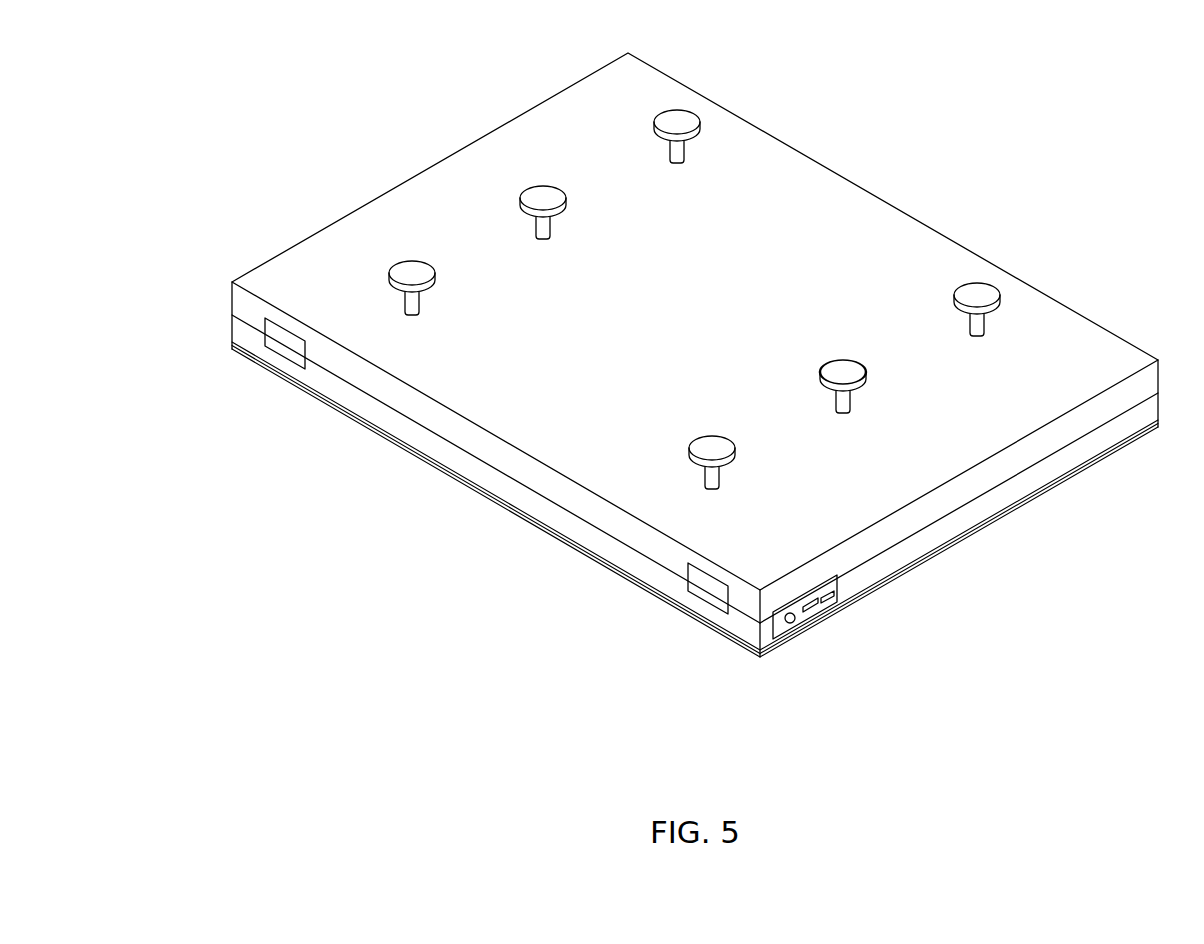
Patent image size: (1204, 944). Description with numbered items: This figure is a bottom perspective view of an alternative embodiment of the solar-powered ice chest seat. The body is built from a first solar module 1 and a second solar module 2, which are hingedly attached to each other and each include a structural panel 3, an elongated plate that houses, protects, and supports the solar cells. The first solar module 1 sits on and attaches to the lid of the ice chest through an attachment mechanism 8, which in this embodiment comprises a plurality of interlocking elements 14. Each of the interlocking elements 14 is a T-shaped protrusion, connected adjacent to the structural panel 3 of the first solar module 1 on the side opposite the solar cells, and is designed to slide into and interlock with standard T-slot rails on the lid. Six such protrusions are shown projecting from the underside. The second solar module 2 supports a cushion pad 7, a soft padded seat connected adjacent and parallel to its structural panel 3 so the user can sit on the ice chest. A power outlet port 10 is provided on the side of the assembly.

The first solar module 1 is at (223, 298).
The second solar module 2 is at (220, 340).
The structural panel 3 is at (1148, 386).
The cushion pad 7 is at (1040, 493).
The attachment mechanism 8 is at (694, 299).
The interlocking elements 14 is at (681, 122).
The power outlet port 10 is at (811, 612).